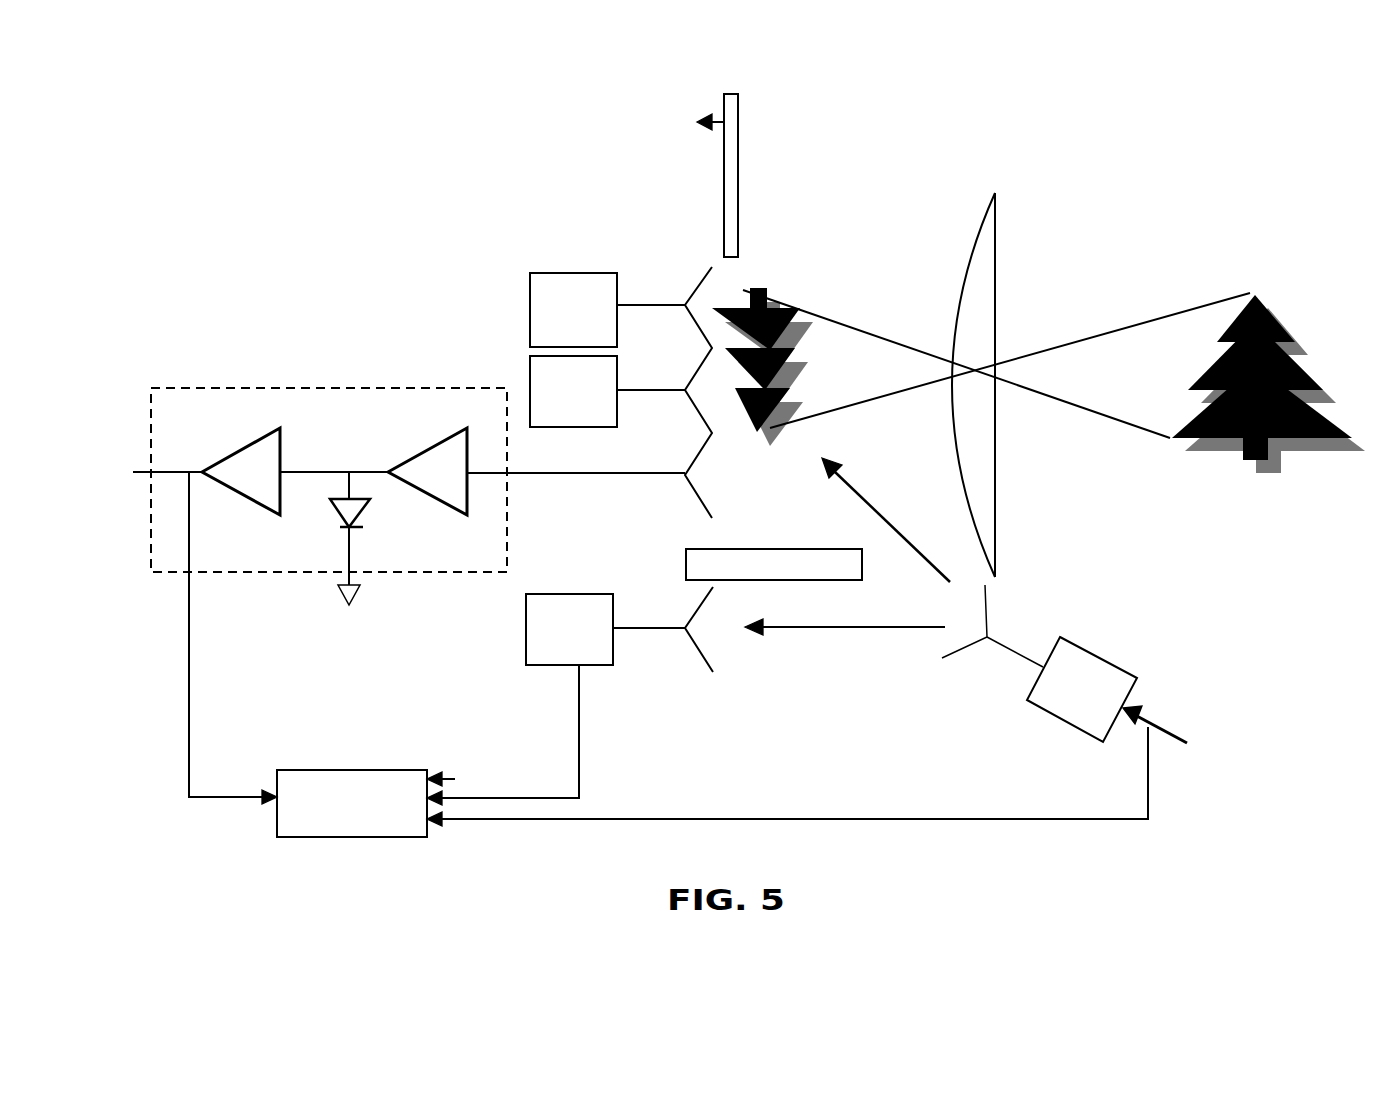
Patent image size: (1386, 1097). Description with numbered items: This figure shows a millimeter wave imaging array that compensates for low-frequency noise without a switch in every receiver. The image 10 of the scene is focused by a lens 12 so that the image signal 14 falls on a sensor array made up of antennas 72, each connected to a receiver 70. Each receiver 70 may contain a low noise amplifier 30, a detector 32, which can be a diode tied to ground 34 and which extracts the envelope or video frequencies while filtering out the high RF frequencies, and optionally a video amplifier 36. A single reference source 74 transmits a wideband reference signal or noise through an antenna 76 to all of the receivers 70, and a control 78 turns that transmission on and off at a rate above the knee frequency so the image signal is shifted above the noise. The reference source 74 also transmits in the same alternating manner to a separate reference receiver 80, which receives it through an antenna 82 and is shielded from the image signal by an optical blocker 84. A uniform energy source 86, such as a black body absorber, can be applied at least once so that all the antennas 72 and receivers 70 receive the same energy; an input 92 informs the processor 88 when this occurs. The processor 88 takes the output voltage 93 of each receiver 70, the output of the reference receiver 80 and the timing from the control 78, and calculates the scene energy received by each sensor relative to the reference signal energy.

The image 10 is at (1258, 298).
The lens 12 is at (985, 278).
The image signal 14 is at (785, 312).
The low noise amplifier 30 is at (455, 452).
The detector 32 is at (330, 507).
The ground 34 is at (340, 597).
The video amplifier 36 is at (272, 448).
The receiver 70 is at (553, 367).
The antennas 72 is at (700, 288).
The reference source 74 is at (1075, 677).
The antenna 76 is at (975, 645).
The control 78 is at (1165, 725).
The reference receiver 80 is at (575, 628).
The antenna 82 is at (693, 645).
The optical blocker 84 is at (770, 548).
The uniform energy source 86 is at (735, 170).
The processor 88 is at (372, 793).
The input 92 is at (575, 446).
The output voltage 93 is at (212, 795).